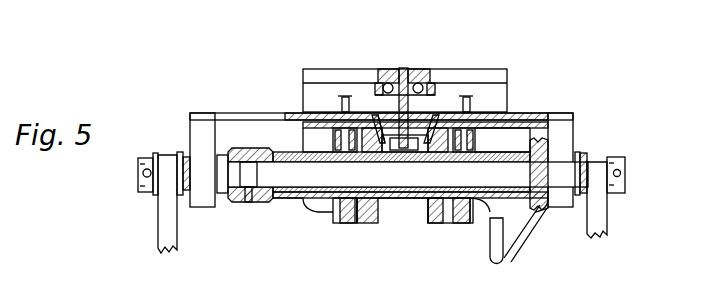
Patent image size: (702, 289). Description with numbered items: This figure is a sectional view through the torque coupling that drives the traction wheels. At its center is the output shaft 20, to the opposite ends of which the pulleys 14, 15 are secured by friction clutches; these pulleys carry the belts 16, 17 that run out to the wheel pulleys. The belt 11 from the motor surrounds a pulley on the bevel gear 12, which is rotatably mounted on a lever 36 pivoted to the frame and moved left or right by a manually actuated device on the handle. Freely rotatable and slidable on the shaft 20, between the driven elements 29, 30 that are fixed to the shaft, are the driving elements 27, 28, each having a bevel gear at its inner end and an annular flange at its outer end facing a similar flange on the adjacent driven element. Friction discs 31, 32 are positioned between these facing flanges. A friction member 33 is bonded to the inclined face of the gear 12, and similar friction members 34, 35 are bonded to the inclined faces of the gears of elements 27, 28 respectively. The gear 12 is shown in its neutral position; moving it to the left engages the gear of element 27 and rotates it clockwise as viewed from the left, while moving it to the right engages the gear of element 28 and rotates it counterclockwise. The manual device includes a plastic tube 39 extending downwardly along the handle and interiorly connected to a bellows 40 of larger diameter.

The belt 11 is at (471, 99).
The bevel gear 12 is at (345, 97).
The pulley 14 is at (149, 193).
The pulley 15 is at (608, 157).
The belt 16 is at (176, 226).
The belt 17 is at (607, 214).
The output shaft 20 is at (328, 182).
The driving element 27 is at (365, 217).
The driving element 28 is at (435, 216).
The driven element 29 is at (273, 197).
The driven element 30 is at (487, 136).
The friction disc 31 is at (340, 225).
The friction disc 32 is at (462, 225).
The friction member 33 is at (390, 103).
The friction member 34 is at (376, 213).
The friction member 35 is at (432, 216).
The lever 36 is at (420, 70).
The plastic tube 39 is at (521, 240).
The bellows 40 is at (535, 138).